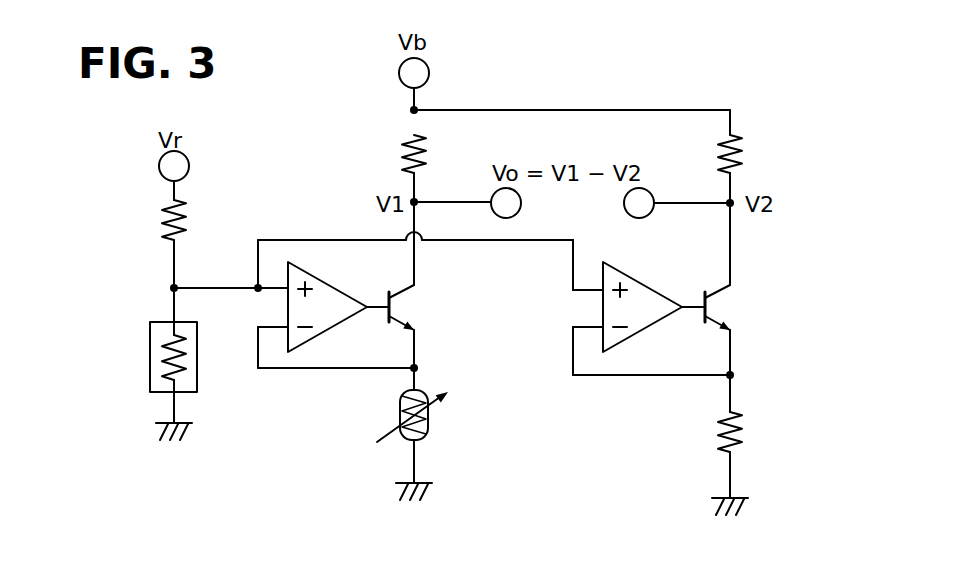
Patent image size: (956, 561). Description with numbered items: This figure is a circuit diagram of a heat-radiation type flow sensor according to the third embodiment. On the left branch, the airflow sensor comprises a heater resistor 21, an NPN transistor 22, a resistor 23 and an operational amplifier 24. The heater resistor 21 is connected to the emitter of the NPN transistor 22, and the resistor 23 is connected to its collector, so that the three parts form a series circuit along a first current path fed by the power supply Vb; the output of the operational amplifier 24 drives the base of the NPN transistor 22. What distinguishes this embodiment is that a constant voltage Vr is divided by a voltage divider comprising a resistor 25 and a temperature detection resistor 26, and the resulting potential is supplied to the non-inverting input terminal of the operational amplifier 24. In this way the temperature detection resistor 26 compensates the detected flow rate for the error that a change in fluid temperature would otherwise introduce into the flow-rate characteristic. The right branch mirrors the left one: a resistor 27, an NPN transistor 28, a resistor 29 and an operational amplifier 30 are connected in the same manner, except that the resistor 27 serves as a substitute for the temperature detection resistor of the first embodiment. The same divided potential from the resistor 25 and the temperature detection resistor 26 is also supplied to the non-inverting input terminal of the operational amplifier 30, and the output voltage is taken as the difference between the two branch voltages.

The heater resistor 21 is at (428, 425).
The NPN transistor 22 is at (406, 294).
The resistor 23 is at (403, 150).
The operational amplifier 24 is at (333, 288).
The resistor 25 is at (186, 211).
The temperature detection resistor 26 is at (197, 377).
The resistor 27 is at (742, 420).
The NPN transistor 28 is at (728, 295).
The resistor 29 is at (745, 145).
The operational amplifier 30 is at (641, 282).